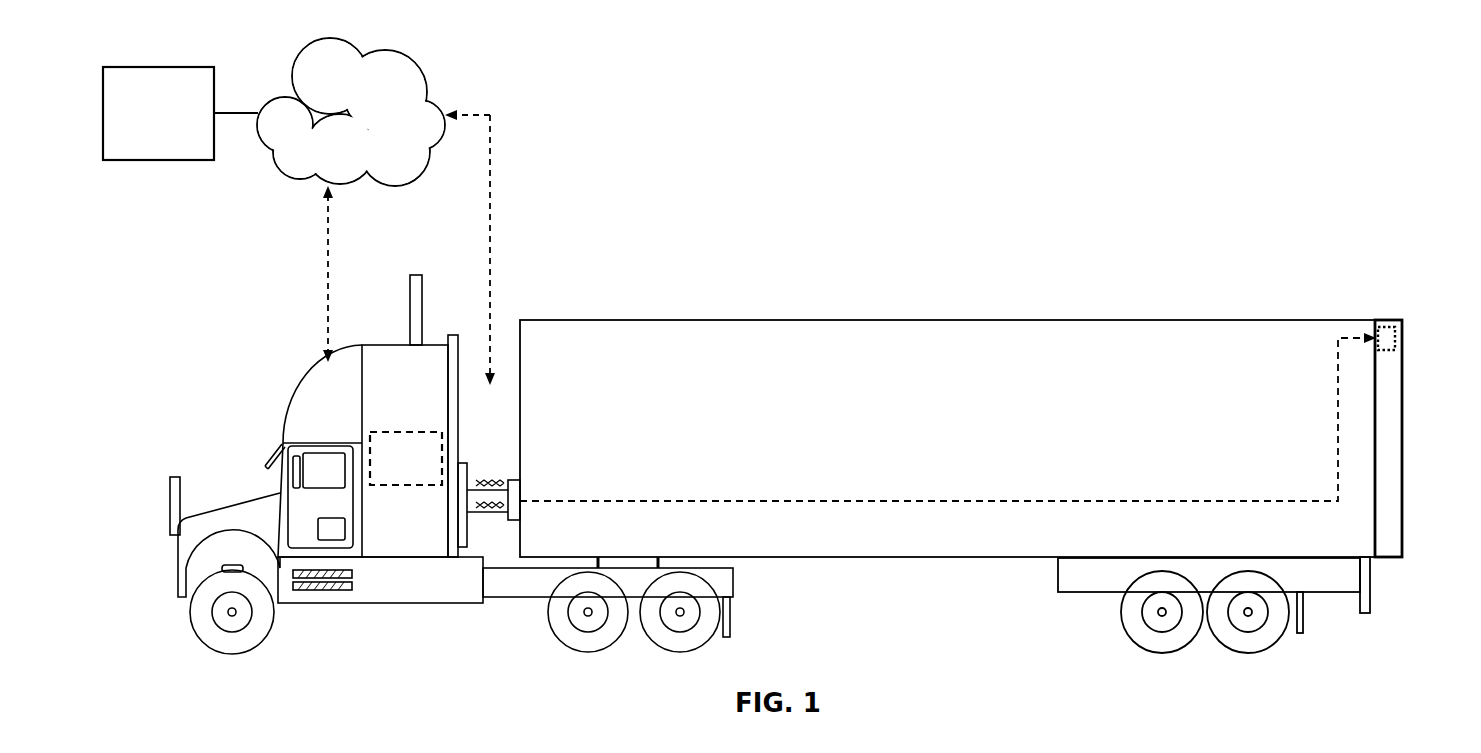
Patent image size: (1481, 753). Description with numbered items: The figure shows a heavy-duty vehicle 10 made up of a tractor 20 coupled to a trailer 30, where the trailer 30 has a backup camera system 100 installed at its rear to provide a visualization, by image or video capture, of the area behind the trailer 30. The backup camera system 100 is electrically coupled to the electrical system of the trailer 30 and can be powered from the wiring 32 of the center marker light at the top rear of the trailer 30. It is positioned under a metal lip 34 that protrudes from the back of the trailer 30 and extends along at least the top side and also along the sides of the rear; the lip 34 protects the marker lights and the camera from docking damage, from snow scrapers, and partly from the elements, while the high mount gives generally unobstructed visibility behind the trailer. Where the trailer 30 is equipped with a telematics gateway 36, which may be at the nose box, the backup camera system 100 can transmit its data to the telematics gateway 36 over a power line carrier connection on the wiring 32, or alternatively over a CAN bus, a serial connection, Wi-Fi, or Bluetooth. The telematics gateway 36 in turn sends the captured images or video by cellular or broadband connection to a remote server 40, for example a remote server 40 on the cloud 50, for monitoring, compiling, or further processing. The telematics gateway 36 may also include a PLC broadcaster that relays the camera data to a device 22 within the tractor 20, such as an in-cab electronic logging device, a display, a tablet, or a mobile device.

The heavy-duty vehicle 10 is at (1204, 118).
The tractor 20 is at (235, 500).
The device 22 is at (392, 432).
The trailer 30 is at (887, 320).
The wiring 32 is at (1052, 498).
The metal lip 34 is at (1385, 320).
The telematics gateway 36 is at (515, 478).
The remote server 40 is at (167, 63).
The cloud 50 is at (337, 40).
The backup camera system 100 is at (1387, 353).